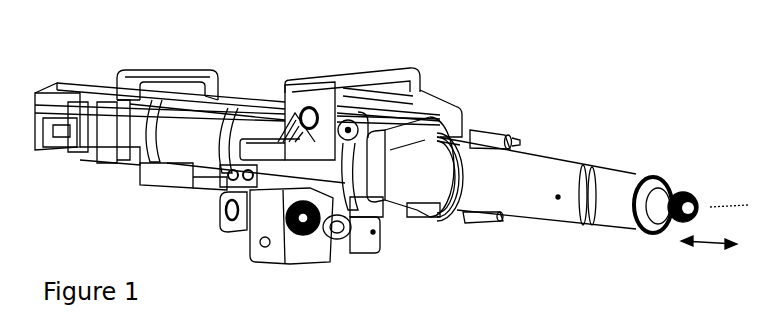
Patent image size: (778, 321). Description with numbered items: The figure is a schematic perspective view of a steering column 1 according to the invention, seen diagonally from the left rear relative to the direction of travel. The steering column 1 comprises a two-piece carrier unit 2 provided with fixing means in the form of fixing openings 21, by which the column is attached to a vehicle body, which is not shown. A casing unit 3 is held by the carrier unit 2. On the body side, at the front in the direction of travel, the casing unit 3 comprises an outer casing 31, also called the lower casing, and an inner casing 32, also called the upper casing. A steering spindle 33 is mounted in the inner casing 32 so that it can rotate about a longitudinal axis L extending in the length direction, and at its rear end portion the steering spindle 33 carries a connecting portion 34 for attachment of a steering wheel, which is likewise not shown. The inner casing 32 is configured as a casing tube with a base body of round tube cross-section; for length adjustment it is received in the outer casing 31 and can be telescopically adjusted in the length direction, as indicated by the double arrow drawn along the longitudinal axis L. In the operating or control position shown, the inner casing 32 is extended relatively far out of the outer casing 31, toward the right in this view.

The steering column 1 is at (506, 58).
The carrier unit 2 is at (163, 70).
The fixing openings 21 is at (119, 72).
The casing unit 3 is at (268, 53).
The outer casing 31 is at (420, 182).
The inner casing 32 is at (564, 170).
The steering spindle 33 is at (667, 165).
The connecting portion 34 is at (690, 194).
The longitudinal axis L is at (742, 200).